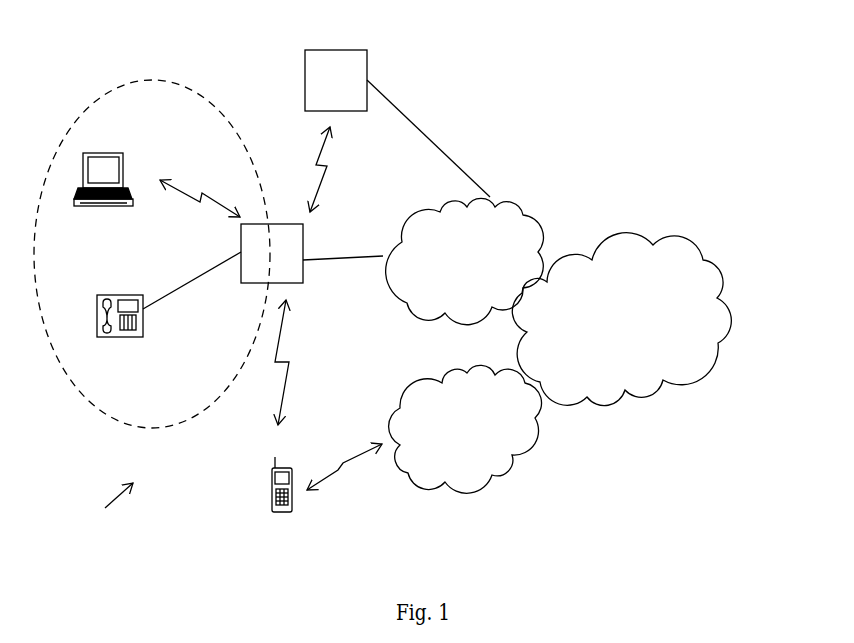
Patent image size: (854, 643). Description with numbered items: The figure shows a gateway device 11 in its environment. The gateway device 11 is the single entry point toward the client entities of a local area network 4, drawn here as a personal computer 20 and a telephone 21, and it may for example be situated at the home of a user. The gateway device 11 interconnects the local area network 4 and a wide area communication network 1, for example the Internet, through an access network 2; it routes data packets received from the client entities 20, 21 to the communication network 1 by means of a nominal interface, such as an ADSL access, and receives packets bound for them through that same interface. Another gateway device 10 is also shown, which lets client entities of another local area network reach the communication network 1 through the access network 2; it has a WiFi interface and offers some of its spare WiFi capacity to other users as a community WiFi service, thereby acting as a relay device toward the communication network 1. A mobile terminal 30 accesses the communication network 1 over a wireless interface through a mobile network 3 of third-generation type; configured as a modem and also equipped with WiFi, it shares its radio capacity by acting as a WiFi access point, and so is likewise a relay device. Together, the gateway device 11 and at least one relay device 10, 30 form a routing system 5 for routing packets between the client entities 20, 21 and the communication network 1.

The wide area communication network 1 is at (643, 404).
The access network 2 is at (476, 326).
The mobile network 3 is at (474, 495).
The local area network 4 is at (92, 405).
The routing system 5 is at (107, 507).
The gateway device 10 is at (320, 111).
The gateway device 11 is at (257, 283).
The personal computer 20 is at (112, 206).
The telephone 21 is at (129, 337).
The mobile terminal 30 is at (272, 505).